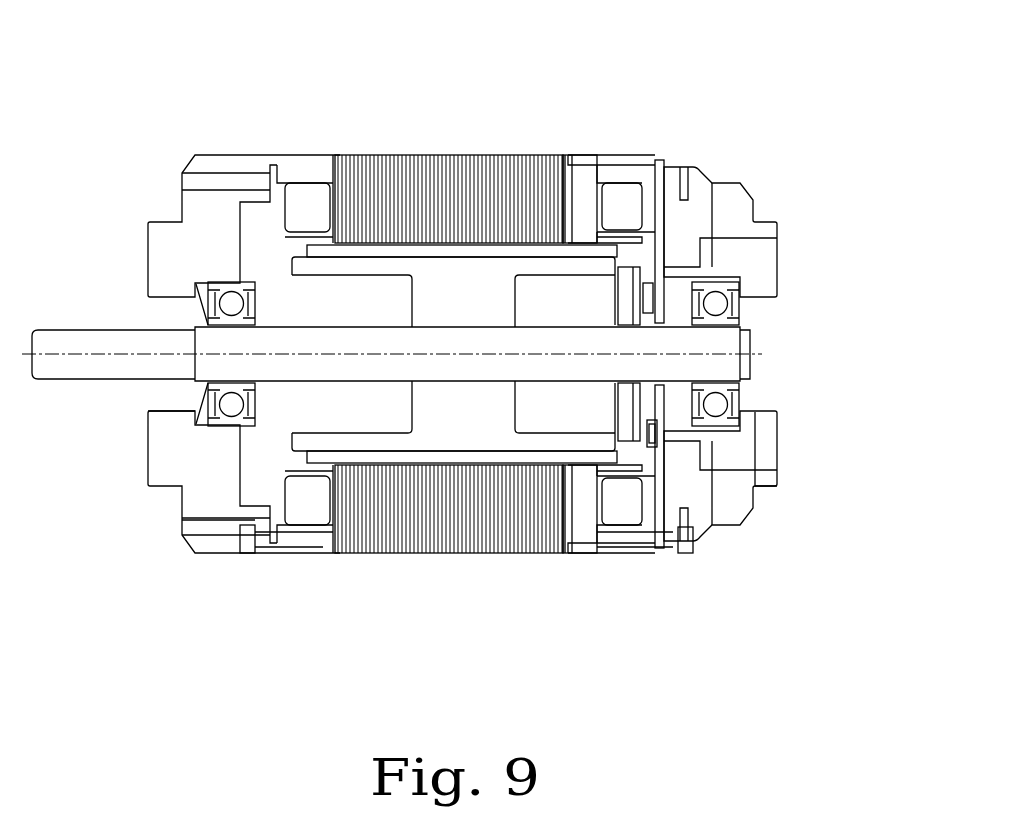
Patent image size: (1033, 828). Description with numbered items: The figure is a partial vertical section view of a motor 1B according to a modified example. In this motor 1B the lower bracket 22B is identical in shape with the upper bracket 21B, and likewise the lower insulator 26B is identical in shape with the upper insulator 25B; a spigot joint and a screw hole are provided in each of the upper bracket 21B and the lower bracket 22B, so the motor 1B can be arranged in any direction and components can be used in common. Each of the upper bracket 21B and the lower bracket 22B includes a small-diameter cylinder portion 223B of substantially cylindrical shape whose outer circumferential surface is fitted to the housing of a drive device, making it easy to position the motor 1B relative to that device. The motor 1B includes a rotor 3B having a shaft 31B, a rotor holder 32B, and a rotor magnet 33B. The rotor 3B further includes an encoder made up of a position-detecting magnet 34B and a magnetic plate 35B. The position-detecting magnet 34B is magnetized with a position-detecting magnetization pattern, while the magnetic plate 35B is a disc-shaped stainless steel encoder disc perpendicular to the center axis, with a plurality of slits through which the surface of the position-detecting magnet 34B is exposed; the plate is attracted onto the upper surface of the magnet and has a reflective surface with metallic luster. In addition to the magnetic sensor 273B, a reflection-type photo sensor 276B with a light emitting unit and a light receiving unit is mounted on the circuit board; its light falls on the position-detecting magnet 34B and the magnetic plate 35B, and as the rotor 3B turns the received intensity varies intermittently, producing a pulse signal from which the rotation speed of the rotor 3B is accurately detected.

The motor 1B is at (80, 39).
The rotor 3B is at (119, 302).
The upper bracket 21B is at (728, 200).
The lower bracket 22B is at (212, 195).
The small-diameter cylinder portion 223B is at (767, 487).
The upper insulator 25B is at (618, 172).
The lower insulator 26B is at (288, 180).
The photo sensor 276B is at (647, 298).
The magnetic sensor 273B is at (657, 445).
The shaft 31B is at (106, 368).
The rotor holder 32B is at (475, 282).
The rotor magnet 33B is at (360, 250).
The position-detecting magnet 34B is at (625, 420).
The magnetic plate 35B is at (637, 442).